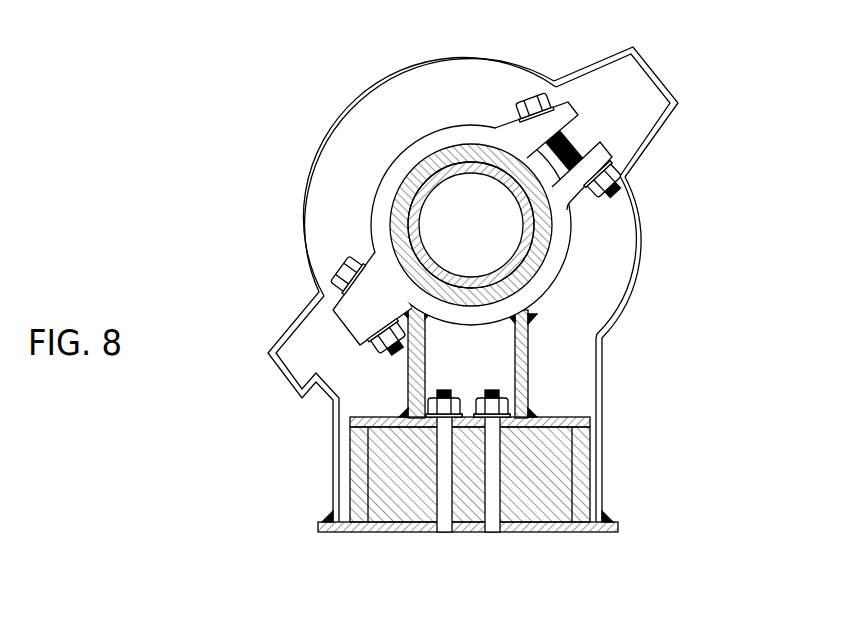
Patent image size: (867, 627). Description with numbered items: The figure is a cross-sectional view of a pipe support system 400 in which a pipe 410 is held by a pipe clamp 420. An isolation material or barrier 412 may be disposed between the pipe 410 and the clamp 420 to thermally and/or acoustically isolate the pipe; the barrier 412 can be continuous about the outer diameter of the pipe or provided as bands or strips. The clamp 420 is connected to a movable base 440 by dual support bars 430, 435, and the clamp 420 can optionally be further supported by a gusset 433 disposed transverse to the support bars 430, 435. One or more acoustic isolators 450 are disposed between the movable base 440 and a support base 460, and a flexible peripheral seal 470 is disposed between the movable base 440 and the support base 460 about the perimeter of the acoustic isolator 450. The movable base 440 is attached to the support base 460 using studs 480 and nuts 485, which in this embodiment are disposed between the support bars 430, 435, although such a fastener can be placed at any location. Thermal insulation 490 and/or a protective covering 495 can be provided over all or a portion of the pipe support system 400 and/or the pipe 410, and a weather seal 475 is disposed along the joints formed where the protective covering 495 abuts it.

The pipe support system 400 is at (245, 78).
The pipe 410 is at (530, 237).
The barrier 412 is at (537, 265).
The pipe clamp 420 is at (462, 130).
The support bar 430 is at (417, 372).
The gusset 433 is at (499, 366).
The support bar 435 is at (520, 333).
The movable base 440 is at (582, 423).
The acoustic isolator 450 is at (470, 510).
The support base 460 is at (590, 524).
The flexible peripheral seal 470 is at (580, 453).
The weather seal 475 is at (328, 517).
The stud 480 is at (502, 394).
The nut 485 is at (508, 410).
The thermal insulation 490 is at (638, 125).
The protective covering 495 is at (650, 65).